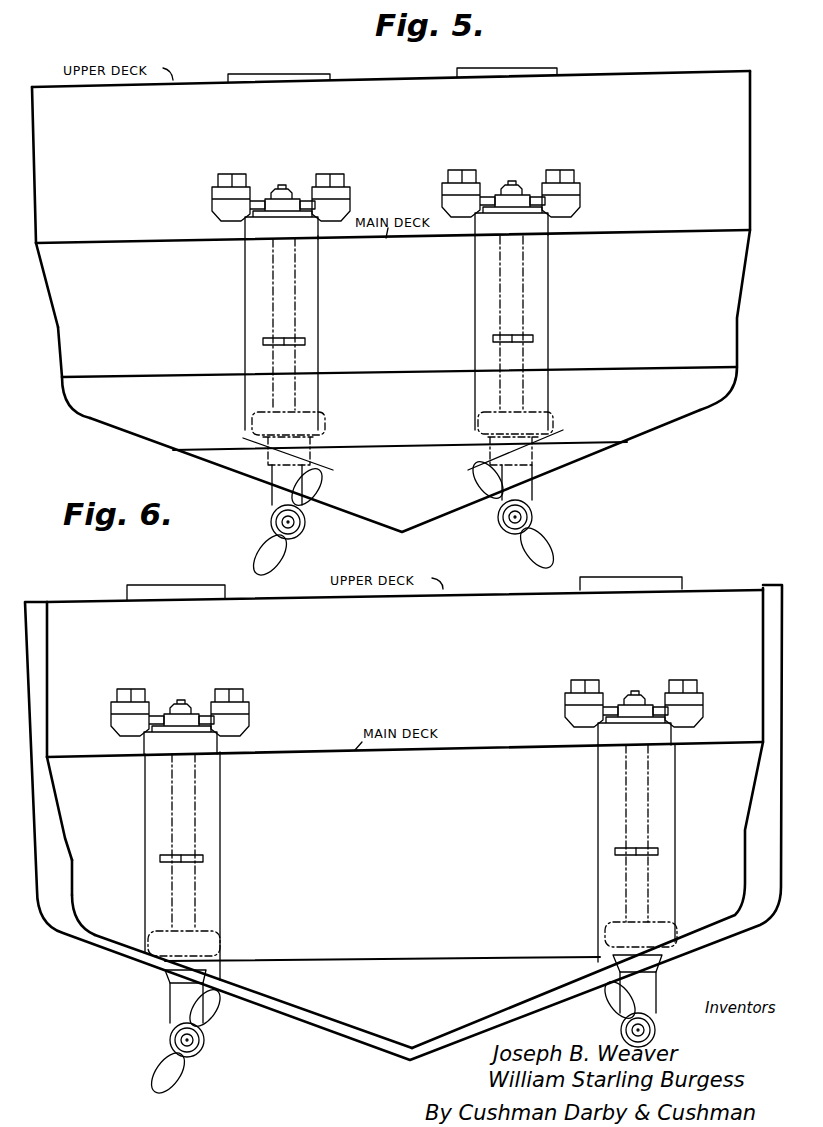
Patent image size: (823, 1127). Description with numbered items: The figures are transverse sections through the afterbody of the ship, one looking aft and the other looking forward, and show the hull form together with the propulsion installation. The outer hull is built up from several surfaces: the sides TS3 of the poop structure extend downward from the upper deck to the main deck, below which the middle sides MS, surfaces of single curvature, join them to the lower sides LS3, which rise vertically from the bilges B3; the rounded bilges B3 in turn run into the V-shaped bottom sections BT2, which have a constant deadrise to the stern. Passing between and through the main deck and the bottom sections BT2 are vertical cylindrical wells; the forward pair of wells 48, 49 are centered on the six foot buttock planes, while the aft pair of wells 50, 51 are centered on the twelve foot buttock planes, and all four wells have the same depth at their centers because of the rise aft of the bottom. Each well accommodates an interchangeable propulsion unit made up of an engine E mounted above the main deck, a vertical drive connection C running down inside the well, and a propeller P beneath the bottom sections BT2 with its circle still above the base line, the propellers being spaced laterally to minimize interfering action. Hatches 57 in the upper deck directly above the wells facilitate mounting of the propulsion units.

In FIG. 5, the hatches 57 is at (277, 76).
In FIG. 6, the hatches 57 is at (160, 588).
In FIG. 5, the top sides TS3 is at (38, 165).
In FIG. 5, the middle sides MS is at (55, 293).
In FIG. 6, the middle sides MS is at (63, 805).
In FIG. 5, the lower sides LS3 is at (63, 356).
In FIG. 6, the lower sides LS3 is at (47, 677).
In FIG. 5, the afterbody bilges B3 is at (78, 414).
In FIG. 6, the afterbody bilges B3 is at (82, 918).
In FIG. 5, the bottom sections BT2 is at (200, 460).
In FIG. 6, the bottom sections BT2 is at (283, 1004).
In FIG. 5, the engines E is at (326, 177).
In FIG. 6, the engines E is at (233, 689).
In FIG. 5, the vertical cylindrical well 49 is at (317, 319).
In FIG. 5, the vertical cylindrical well 48 is at (480, 305).
In FIG. 6, the vertical cylindrical well 50 is at (220, 810).
In FIG. 6, the vertical cylindrical well 51 is at (600, 783).
In FIG. 5, the vertical drive connections C is at (298, 367).
In FIG. 6, the vertical drive connections C is at (200, 847).
In FIG. 5, the propellers P is at (285, 558).
In FIG. 6, the propellers P is at (186, 1013).